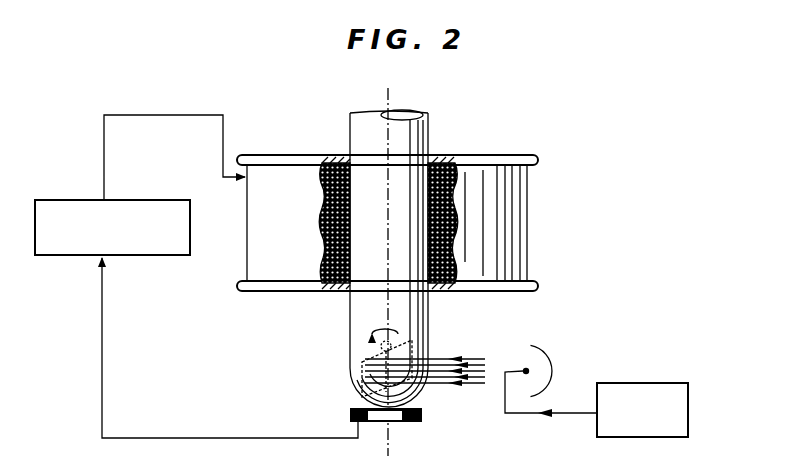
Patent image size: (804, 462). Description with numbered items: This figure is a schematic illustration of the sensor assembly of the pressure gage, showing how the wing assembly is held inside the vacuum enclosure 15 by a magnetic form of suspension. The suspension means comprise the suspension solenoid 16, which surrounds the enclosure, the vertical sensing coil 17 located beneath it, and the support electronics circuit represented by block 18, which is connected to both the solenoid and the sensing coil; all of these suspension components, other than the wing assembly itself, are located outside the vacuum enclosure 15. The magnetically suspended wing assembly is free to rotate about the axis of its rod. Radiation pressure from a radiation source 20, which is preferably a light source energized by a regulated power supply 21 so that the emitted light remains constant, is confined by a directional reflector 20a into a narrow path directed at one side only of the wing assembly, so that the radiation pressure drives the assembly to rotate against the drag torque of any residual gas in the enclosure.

The vacuum enclosure 15 is at (357, 312).
The suspension solenoid 16 is at (517, 235).
The vertical sensing coil 17 is at (353, 413).
The support electronics circuit 18 is at (174, 212).
The radiation source 20 is at (525, 368).
The directional reflector 20a is at (543, 352).
The regulated power supply 21 is at (670, 383).